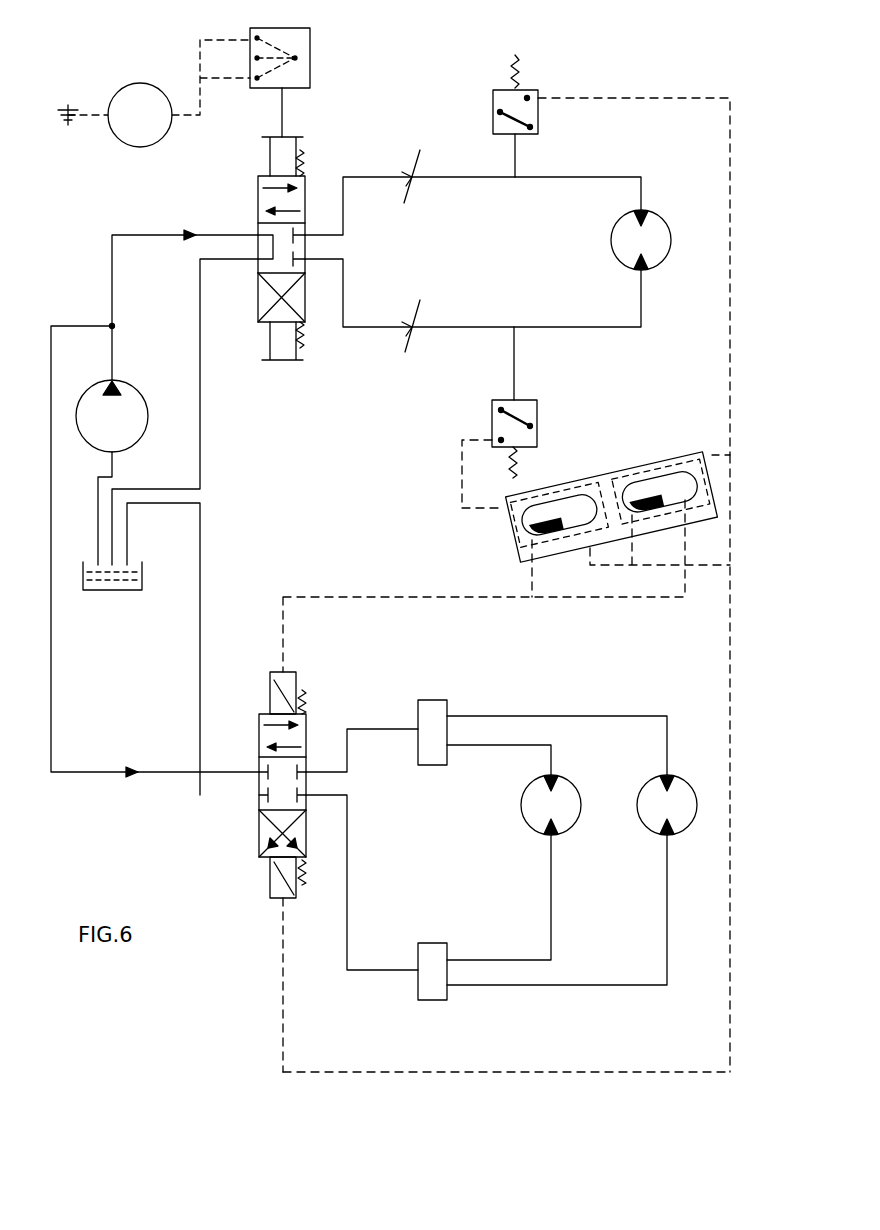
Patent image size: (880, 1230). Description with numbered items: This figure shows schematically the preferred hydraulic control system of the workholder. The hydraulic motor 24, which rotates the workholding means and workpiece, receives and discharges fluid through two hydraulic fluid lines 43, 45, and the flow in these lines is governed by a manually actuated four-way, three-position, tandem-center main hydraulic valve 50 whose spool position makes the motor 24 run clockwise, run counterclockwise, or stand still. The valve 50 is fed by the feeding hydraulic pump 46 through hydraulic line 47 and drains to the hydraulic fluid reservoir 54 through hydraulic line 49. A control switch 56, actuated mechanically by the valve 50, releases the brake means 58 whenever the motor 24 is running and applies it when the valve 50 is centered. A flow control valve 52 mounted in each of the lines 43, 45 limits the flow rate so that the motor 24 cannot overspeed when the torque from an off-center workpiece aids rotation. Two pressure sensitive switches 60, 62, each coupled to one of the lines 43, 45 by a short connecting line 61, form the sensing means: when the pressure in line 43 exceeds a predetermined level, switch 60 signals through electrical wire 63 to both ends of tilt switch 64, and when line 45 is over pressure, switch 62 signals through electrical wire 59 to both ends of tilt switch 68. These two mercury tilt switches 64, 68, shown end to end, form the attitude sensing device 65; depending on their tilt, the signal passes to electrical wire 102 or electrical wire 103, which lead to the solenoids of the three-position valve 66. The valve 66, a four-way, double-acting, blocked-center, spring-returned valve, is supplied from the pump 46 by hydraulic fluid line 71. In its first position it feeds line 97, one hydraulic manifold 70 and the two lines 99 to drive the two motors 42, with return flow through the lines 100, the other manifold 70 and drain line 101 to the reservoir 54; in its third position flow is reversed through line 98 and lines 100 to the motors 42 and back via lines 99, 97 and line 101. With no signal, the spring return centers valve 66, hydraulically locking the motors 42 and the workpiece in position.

The hydraulic motor 24 is at (663, 232).
The motor 42 is at (532, 812).
The hydraulic fluid line 43 is at (622, 177).
The hydraulic fluid line 45 is at (600, 330).
The feeding hydraulic pump 46 is at (128, 398).
The hydraulic line 47 is at (140, 232).
The hydraulic line 49 is at (202, 448).
The main hydraulic valve 50 is at (258, 201).
The flow control valve 52 is at (420, 172).
The hydraulic fluid reservoir 54 is at (124, 592).
The control switch 56 is at (308, 55).
The brake means 58 is at (142, 95).
The electrical wire 59 is at (462, 467).
The pressure sensitive switch 60 is at (520, 88).
The short connecting line 61 is at (518, 160).
The pressure sensitive switch 62 is at (532, 412).
The electrical wire 63 is at (648, 97).
The tilt switch 64 is at (672, 488).
The attitude sensing device 65 is at (613, 498).
The three-position valve 66 is at (259, 812).
The tilt switch 68 is at (575, 490).
The hydraulic manifold 70 is at (440, 705).
The hydraulic fluid line 71 is at (55, 668).
The hydraulic fluid line 97 is at (365, 725).
The hydraulic fluid line 98 is at (350, 843).
The hydraulic fluid line 99 is at (652, 714).
The hydraulic fluid line 100 is at (594, 985).
The hydraulic fluid line 101 is at (202, 560).
The electrical wire 102 is at (397, 595).
The electrical wire 103 is at (435, 1075).